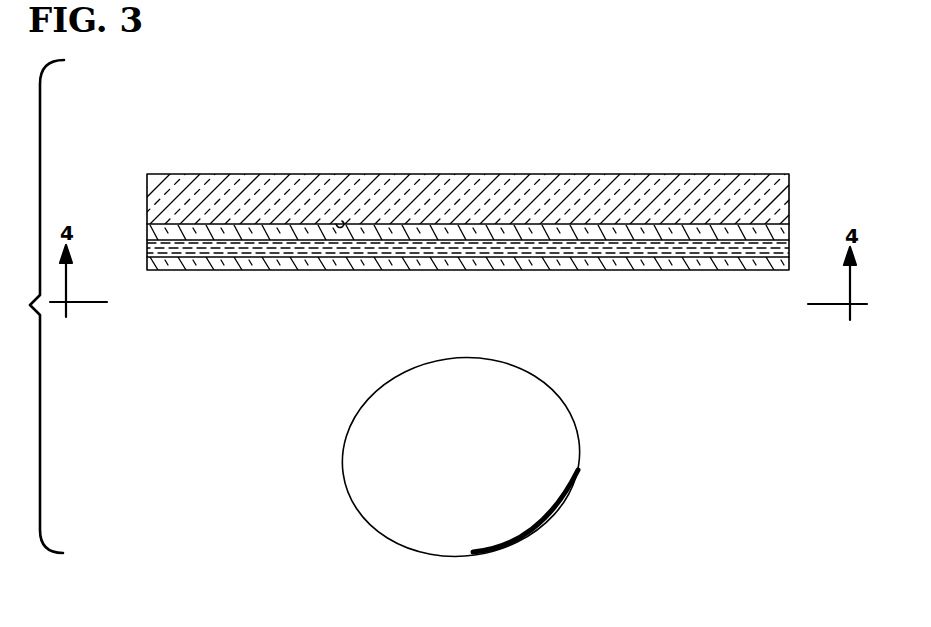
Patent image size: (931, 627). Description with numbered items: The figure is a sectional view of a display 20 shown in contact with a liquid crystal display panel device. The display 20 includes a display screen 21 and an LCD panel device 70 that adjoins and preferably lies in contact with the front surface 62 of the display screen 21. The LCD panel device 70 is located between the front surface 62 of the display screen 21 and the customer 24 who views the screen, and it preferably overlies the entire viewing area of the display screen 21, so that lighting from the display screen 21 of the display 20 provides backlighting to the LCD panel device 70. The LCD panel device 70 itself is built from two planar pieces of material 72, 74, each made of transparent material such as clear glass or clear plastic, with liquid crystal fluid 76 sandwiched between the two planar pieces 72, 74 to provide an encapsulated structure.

The display 20 is at (470, 186).
The display screen 21 is at (145, 175).
The front surface 62 is at (340, 224).
The liquid crystal display (LCD) panel device 70 is at (470, 251).
The planar piece of material 72 is at (789, 229).
The liquid crystal fluid 76 is at (789, 249).
The planar piece of material 74 is at (789, 266).
The customer 24 is at (551, 393).